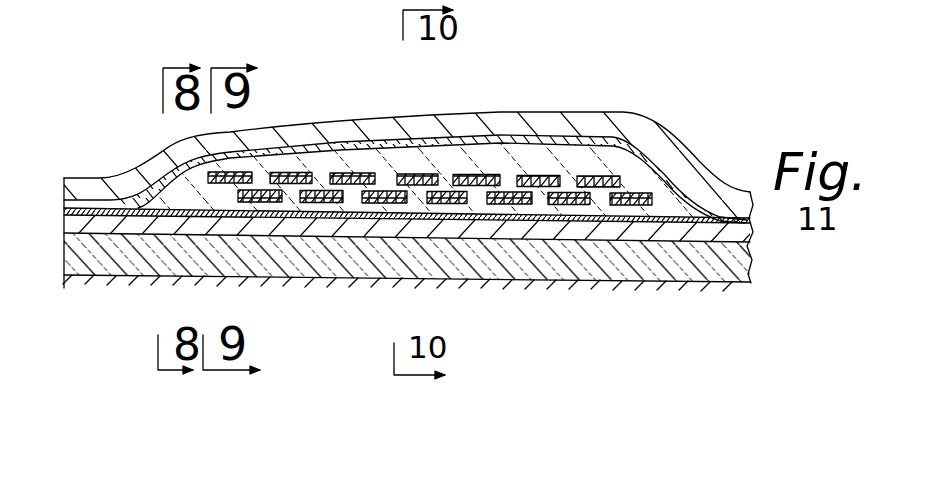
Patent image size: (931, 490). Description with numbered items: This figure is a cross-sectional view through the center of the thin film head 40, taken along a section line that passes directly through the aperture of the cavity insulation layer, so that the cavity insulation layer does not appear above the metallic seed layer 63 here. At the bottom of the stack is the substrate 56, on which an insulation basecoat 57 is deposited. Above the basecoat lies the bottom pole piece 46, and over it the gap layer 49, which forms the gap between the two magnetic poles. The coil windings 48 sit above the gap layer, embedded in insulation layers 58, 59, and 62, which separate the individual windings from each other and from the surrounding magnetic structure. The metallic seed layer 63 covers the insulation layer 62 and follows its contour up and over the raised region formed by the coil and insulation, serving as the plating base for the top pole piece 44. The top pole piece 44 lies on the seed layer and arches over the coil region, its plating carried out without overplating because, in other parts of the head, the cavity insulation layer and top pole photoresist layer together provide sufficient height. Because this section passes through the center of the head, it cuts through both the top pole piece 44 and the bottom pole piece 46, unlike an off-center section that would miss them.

The thin film head 40 is at (271, 295).
The top pole piece 44 is at (516, 130).
The bottom pole piece 46 is at (305, 225).
The coil windings 48 is at (623, 205).
The gap layer 49 is at (137, 213).
The substrate 56 is at (375, 278).
The insulation basecoat 57 is at (163, 260).
The insulation layer 58 is at (447, 207).
The insulation layer 59 is at (337, 188).
The insulation layer 62 is at (496, 152).
The metallic seed layer 63 is at (572, 140).